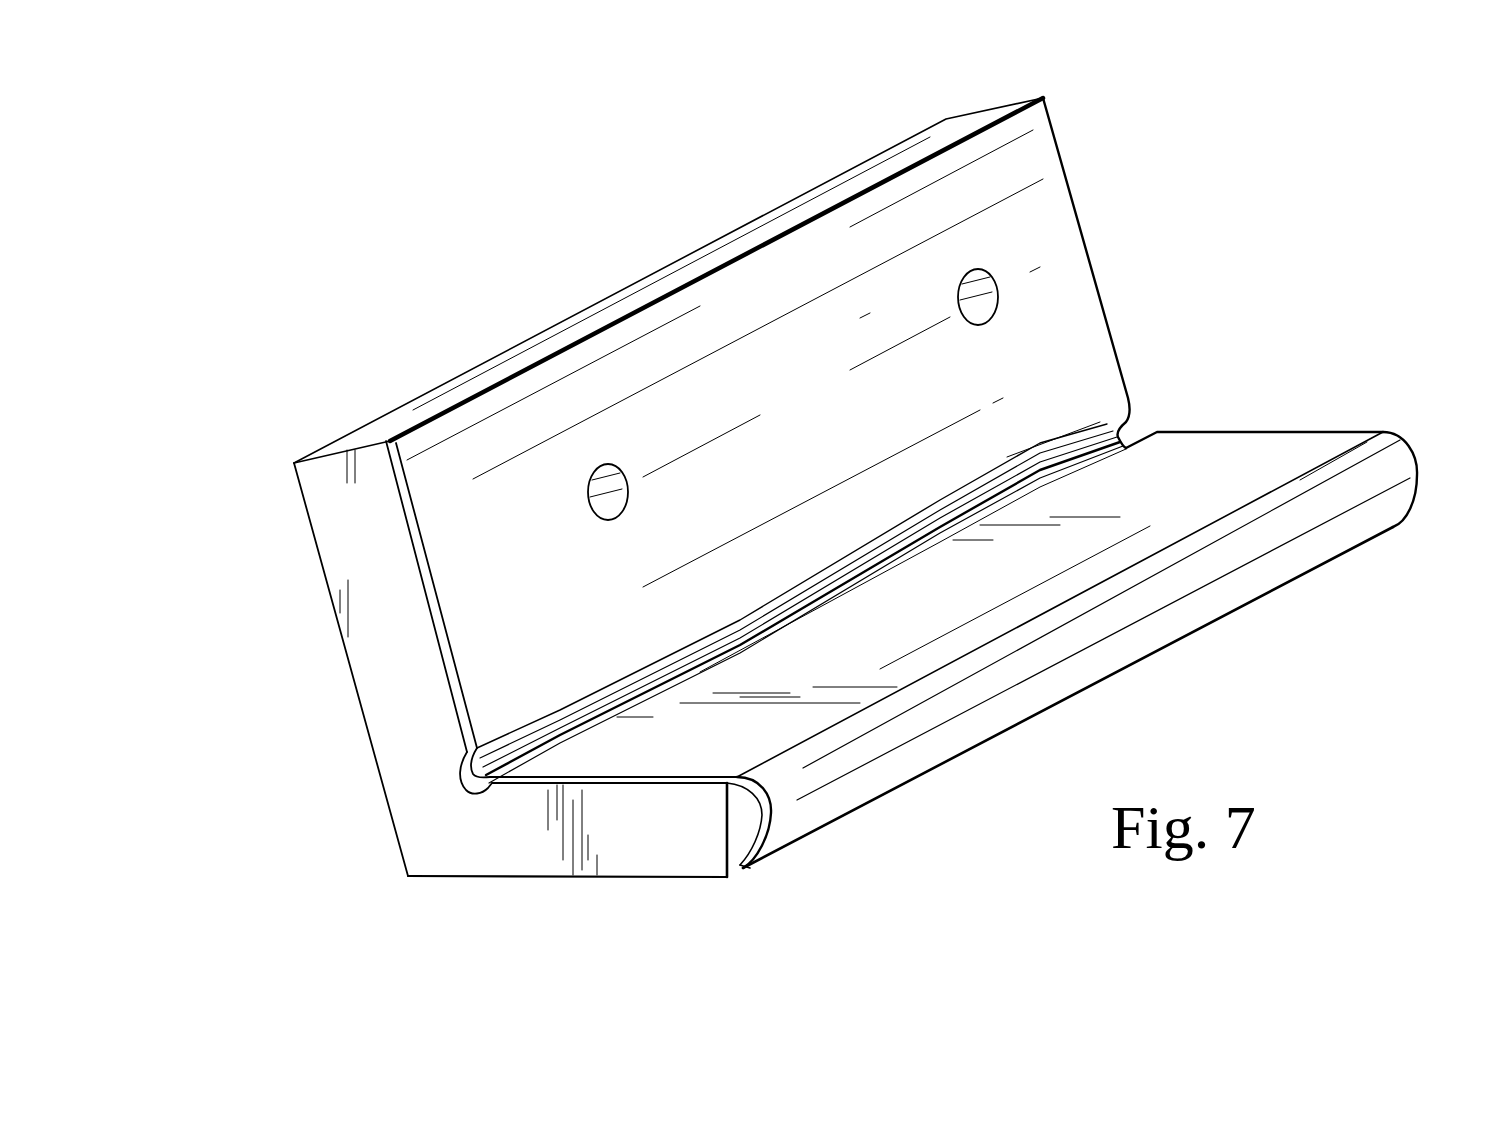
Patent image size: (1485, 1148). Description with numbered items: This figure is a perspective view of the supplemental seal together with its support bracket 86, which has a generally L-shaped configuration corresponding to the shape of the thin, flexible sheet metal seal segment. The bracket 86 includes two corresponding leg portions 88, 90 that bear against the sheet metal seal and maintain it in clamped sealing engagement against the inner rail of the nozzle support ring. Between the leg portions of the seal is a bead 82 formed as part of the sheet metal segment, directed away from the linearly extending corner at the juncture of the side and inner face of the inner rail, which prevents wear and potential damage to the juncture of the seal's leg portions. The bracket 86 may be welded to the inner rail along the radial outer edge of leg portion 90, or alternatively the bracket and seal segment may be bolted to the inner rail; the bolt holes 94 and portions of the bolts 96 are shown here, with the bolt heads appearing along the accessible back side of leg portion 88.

The bead 82 is at (482, 798).
The bracket 86 is at (790, 805).
The leg portion 88 is at (328, 516).
The leg portion 90 is at (648, 867).
The bolt holes 94 is at (693, 393).
The portions of the bolts 96 is at (628, 502).